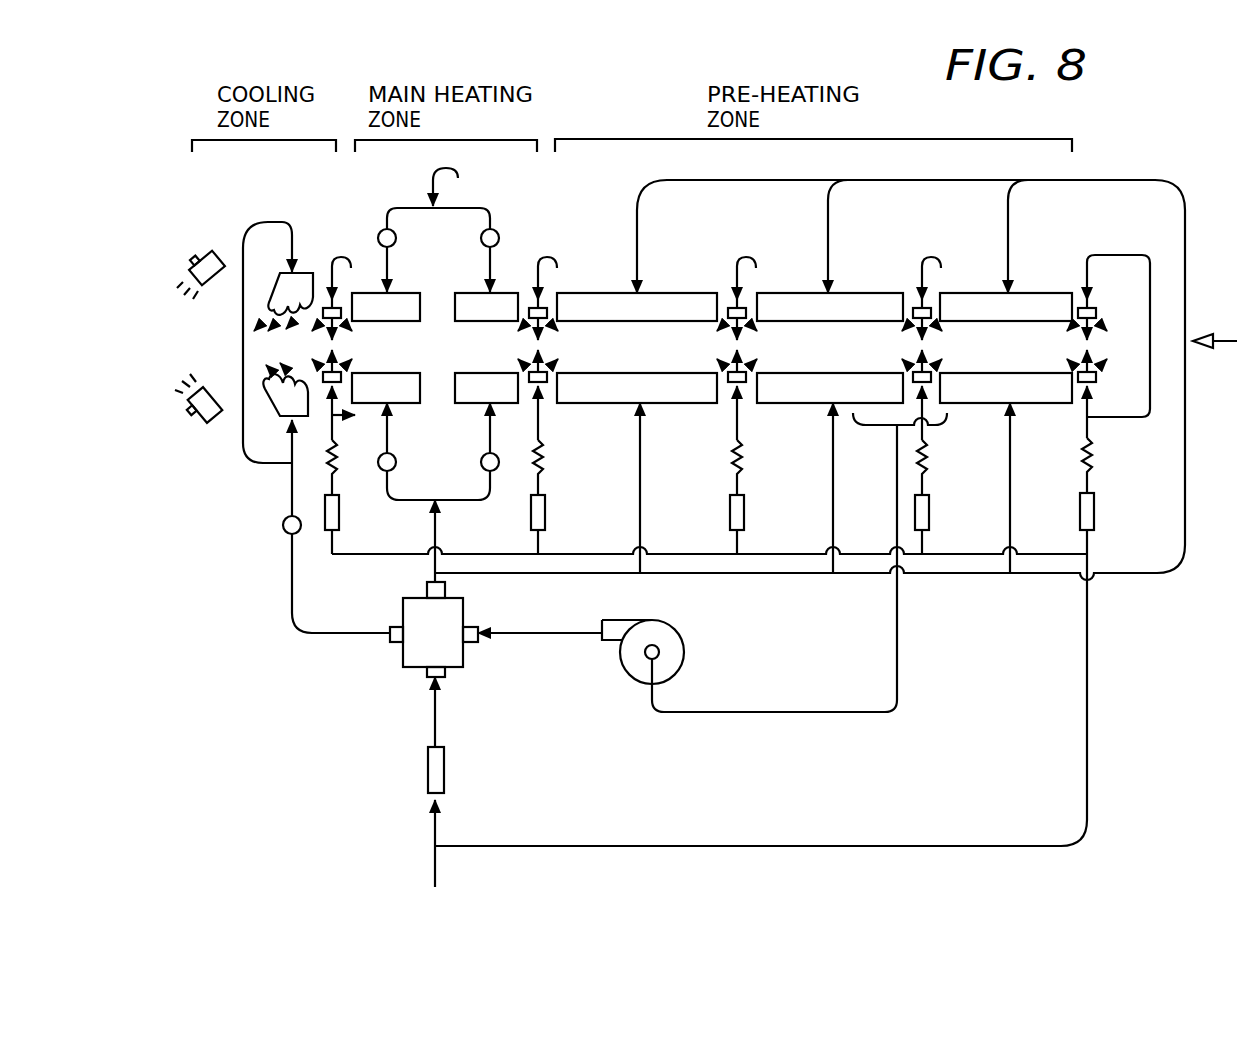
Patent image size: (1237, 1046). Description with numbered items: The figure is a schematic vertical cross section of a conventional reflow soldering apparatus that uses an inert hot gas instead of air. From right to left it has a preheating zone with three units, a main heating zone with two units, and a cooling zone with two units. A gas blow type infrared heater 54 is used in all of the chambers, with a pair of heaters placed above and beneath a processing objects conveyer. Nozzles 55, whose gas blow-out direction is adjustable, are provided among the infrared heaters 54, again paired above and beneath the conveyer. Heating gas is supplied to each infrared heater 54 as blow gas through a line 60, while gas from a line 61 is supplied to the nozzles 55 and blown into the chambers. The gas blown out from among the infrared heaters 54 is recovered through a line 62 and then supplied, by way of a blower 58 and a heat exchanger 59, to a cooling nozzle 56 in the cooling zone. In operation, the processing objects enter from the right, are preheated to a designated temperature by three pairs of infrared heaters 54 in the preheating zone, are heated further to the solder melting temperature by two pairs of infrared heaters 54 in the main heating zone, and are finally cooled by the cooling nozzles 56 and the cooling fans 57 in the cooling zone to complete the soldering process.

The gas blow type infrared heater 54 is at (411, 292).
The nozzle 55 is at (548, 306).
The cooling nozzle 56 is at (302, 271).
The cooling fan 57 is at (214, 248).
The blower 58 is at (675, 637).
The heat exchanger 59 is at (450, 638).
The line 60 is at (546, 573).
The line 61 is at (858, 847).
The line 62 is at (897, 672).